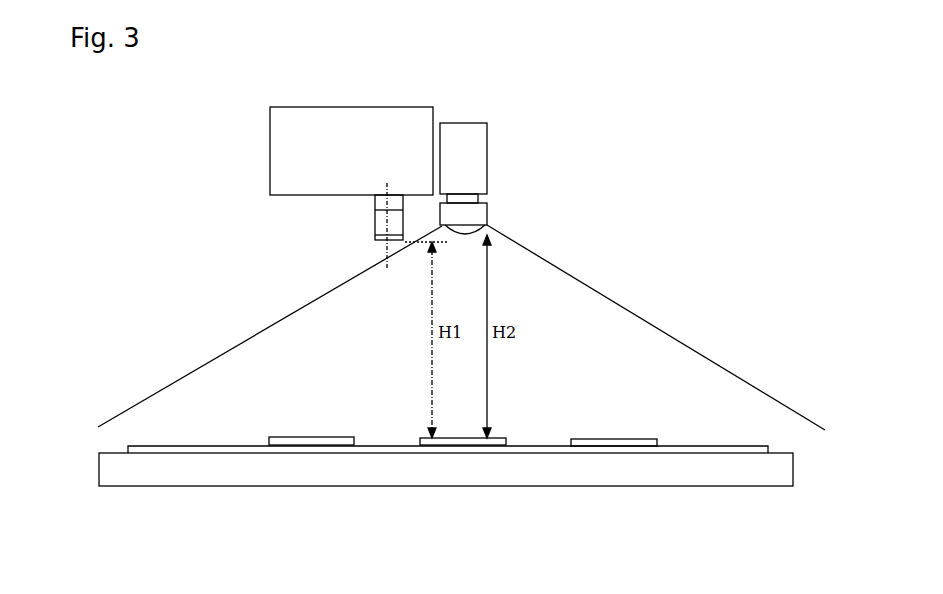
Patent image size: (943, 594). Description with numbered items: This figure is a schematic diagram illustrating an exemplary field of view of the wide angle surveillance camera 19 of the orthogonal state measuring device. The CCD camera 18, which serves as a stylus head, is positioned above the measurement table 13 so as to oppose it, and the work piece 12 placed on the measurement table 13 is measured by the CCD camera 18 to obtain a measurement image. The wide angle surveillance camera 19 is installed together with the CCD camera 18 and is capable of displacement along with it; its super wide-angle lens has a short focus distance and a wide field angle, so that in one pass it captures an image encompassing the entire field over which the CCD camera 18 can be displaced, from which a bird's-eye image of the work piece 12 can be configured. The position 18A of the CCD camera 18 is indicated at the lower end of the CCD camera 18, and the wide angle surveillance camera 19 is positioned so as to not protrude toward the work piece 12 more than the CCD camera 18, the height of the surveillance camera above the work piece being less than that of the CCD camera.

The CCD camera 18 is at (290, 118).
The position of the CCD camera 18A is at (386, 241).
The wide angle surveillance camera 19 is at (628, 166).
The work piece 12 is at (555, 446).
The measurement table 13 is at (446, 466).